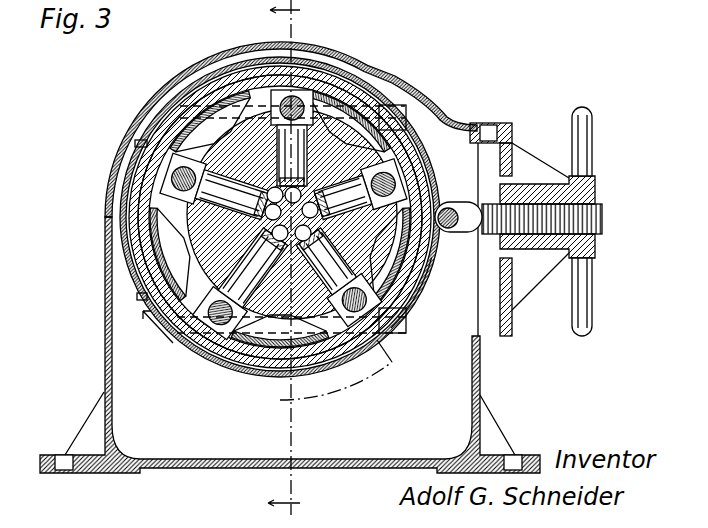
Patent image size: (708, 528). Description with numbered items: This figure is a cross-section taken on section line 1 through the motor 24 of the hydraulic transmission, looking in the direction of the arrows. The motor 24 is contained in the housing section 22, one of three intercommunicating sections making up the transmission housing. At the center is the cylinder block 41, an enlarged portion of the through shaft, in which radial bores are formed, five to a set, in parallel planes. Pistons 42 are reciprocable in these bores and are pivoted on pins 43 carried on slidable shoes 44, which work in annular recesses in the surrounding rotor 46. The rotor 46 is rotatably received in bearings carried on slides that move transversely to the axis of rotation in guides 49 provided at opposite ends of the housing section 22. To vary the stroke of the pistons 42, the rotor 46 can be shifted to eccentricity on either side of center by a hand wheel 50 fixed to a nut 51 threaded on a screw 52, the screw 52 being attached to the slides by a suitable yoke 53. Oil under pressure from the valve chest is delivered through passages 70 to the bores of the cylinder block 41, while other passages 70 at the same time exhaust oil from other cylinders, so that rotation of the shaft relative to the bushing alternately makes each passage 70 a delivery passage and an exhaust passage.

The section line 1- 1 is at (284, 261).
The housing section 22 is at (103, 234).
The motor 24 is at (217, 372).
The cylinder block 41 is at (213, 97).
The pistons 42 is at (187, 236).
The pins 43 is at (295, 100).
The slidable shoes 44 is at (238, 68).
The rotor 46 is at (399, 132).
The guides 49 is at (398, 108).
The hand wheel 50 is at (586, 122).
The nut 51 is at (512, 165).
The screw 52 is at (603, 212).
The yoke 53 is at (430, 271).
The passages 70 is at (250, 246).